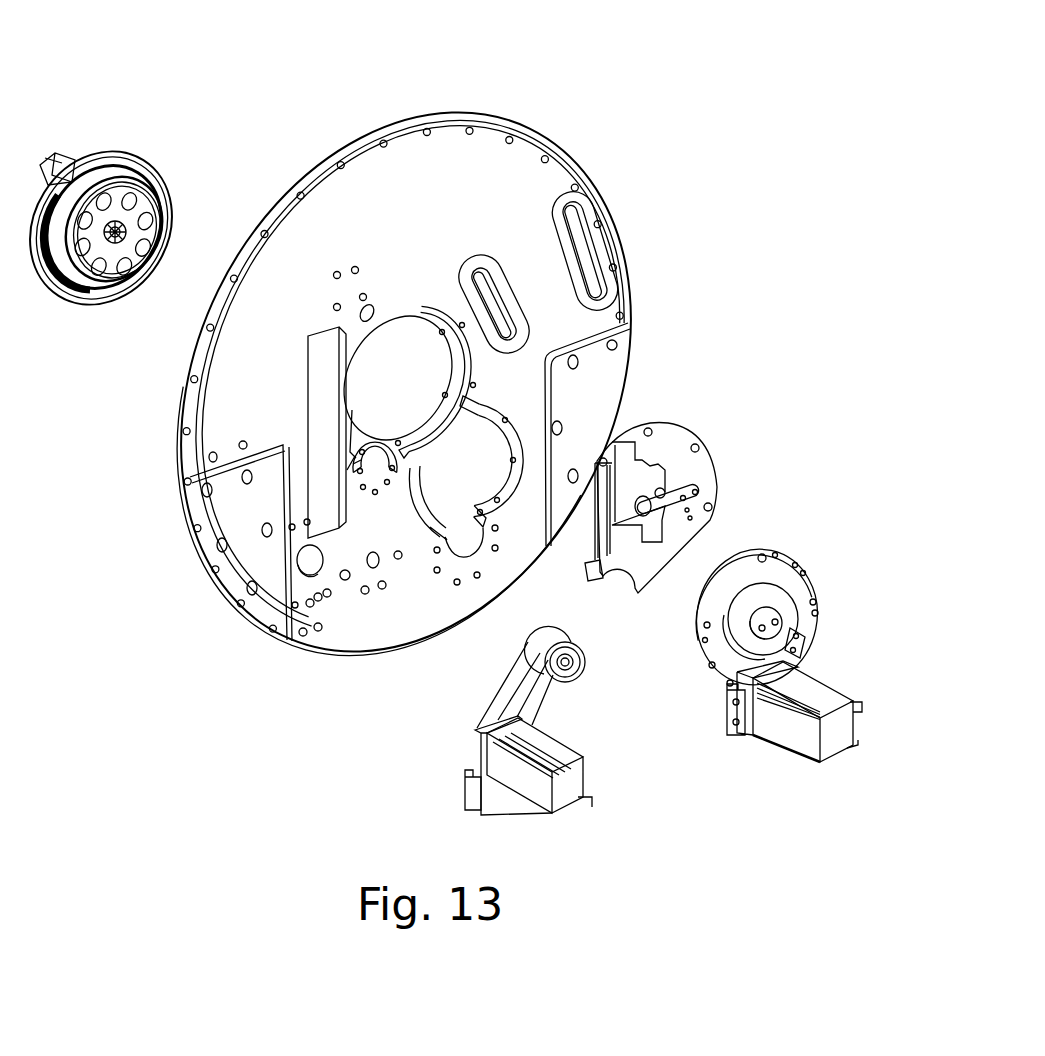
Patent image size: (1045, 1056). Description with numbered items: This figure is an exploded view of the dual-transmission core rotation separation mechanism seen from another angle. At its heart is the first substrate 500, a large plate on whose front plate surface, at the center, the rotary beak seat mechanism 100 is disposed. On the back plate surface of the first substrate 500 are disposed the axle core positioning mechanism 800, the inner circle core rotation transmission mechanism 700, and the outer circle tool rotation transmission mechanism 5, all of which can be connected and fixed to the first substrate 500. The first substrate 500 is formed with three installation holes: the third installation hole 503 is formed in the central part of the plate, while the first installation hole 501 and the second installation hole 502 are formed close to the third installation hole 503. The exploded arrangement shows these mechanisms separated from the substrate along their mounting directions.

The outer circle tool rotation transmission mechanism 5 is at (493, 700).
The rotary beak seat mechanism 100 is at (88, 145).
The first substrate 500 is at (550, 160).
The first installation hole 501 is at (465, 455).
The second installation hole 502 is at (355, 467).
The third installation hole 503 is at (407, 370).
The inner circle core rotation transmission mechanism 700 is at (836, 643).
The axle core positioning mechanism 800 is at (712, 462).